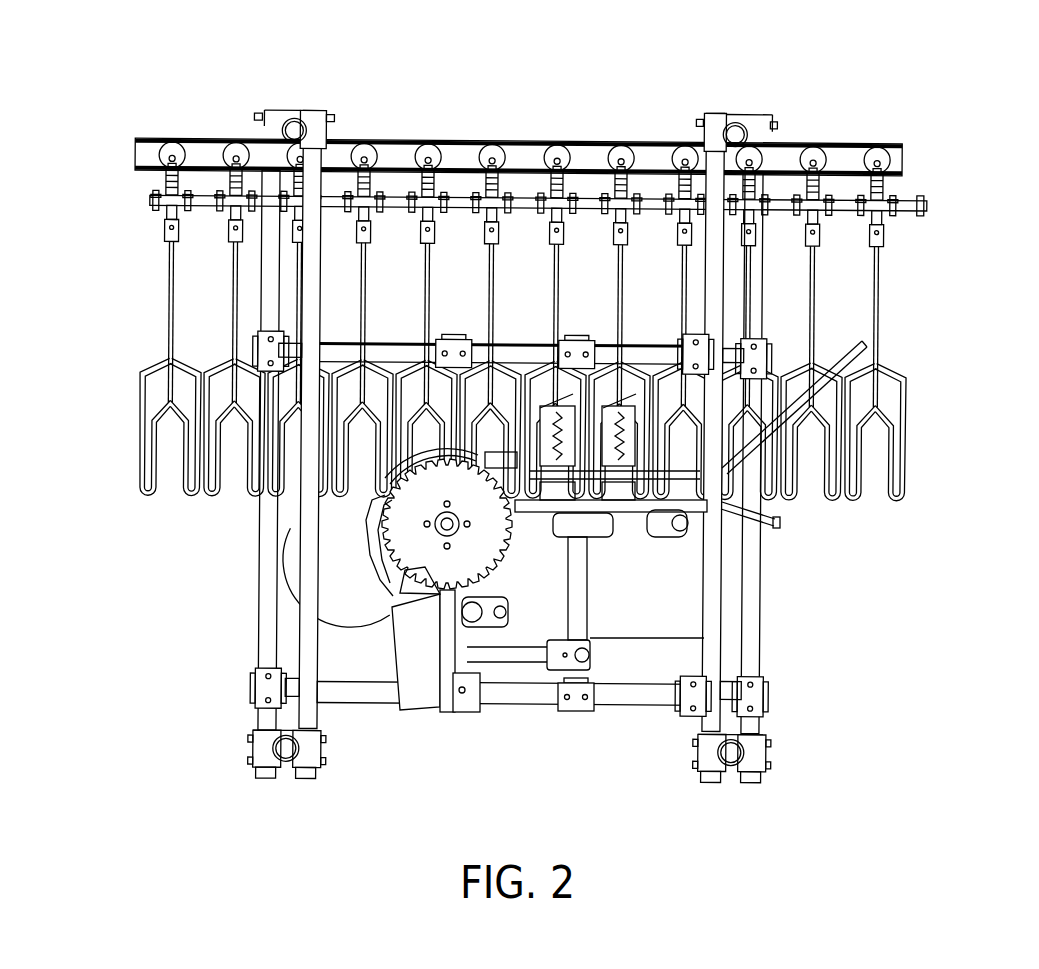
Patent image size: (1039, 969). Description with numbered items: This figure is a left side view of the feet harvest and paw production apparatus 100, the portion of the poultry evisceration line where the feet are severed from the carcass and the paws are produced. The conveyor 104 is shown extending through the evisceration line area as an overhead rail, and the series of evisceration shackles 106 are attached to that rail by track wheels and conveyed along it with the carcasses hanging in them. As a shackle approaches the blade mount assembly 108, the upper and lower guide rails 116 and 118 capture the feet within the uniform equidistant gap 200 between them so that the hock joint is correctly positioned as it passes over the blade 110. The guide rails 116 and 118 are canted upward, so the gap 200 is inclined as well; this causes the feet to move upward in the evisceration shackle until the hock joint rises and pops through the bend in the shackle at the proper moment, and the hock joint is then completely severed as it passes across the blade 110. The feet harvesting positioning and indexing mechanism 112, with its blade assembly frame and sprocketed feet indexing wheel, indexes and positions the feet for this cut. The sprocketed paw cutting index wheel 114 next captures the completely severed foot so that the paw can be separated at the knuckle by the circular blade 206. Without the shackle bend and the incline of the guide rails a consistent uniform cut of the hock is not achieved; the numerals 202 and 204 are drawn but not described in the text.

The feet harvest and paw production apparatus 100 is at (482, 66).
The conveyor 104 is at (896, 146).
The evisceration shackles 106 is at (877, 289).
The blade mount assembly 108 is at (620, 505).
The blade 110 is at (562, 480).
The feet harvesting positioning and indexing mechanism 112 is at (593, 497).
The sprocketed paw cutting index wheel 114 is at (430, 560).
The upper guide rail 116 is at (846, 357).
The lower guide rail 118 is at (774, 521).
The uniform equidistant gap 200 is at (620, 503).
The spring member 202 is at (601, 400).
The drive shaft hub 204 is at (418, 523).
The circular blade 206 is at (376, 549).